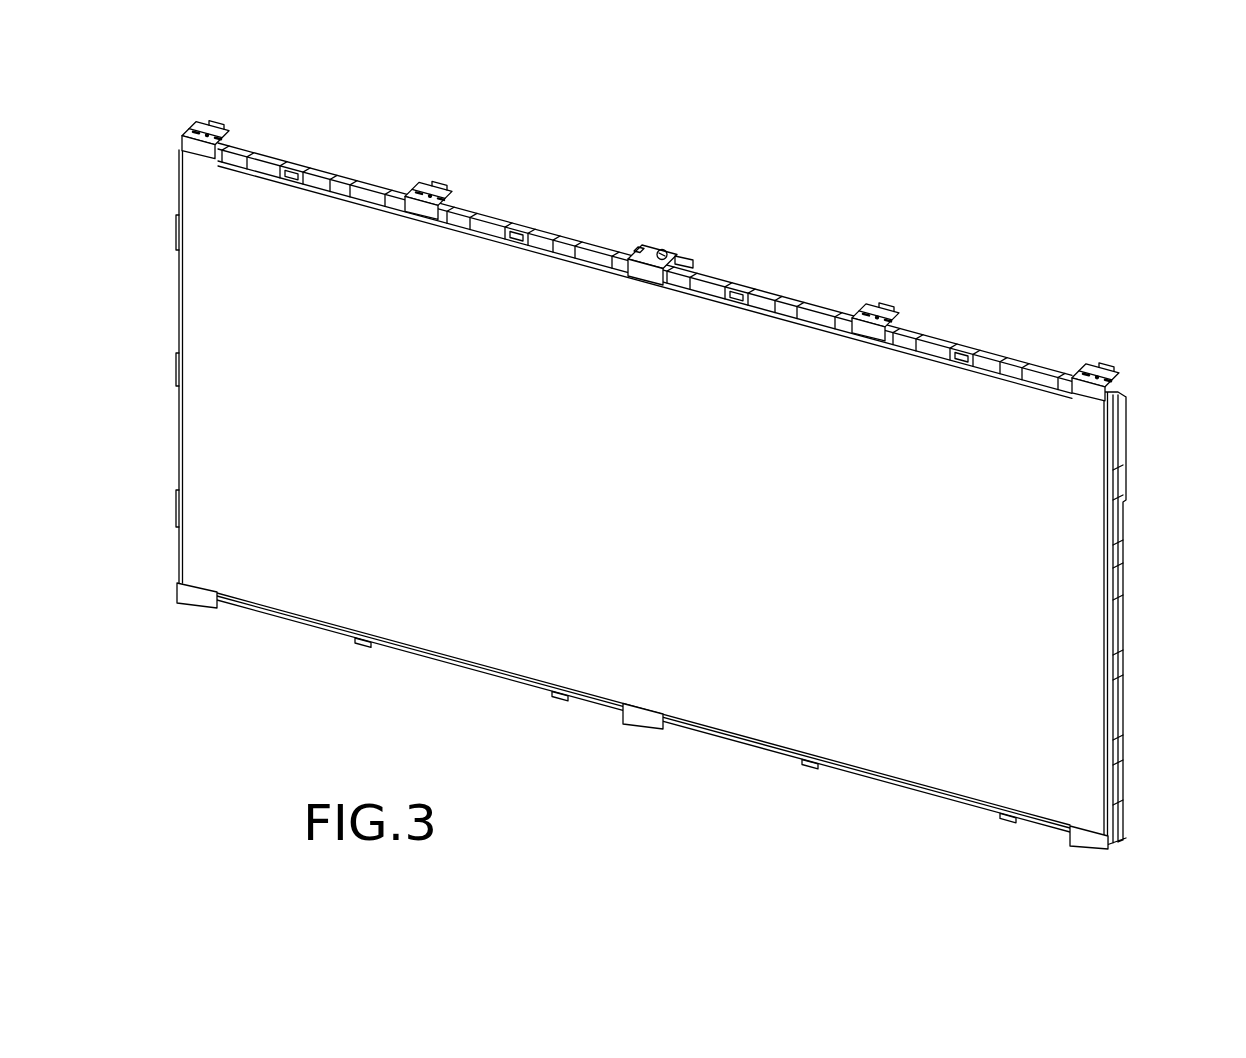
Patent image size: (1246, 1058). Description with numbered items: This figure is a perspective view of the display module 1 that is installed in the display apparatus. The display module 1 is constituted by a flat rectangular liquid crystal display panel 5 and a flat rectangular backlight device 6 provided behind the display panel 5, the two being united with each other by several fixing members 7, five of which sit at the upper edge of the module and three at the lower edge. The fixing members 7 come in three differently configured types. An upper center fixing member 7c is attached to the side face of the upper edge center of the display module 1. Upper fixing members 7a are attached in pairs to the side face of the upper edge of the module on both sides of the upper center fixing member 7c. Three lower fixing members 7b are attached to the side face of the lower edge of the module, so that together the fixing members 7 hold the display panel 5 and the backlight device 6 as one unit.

The display module 1 is at (1066, 169).
The liquid crystal display panel 5 is at (465, 630).
The backlight device 6 is at (1060, 607).
The fixing members 7 is at (659, 486).
The upper fixing members 7a is at (216, 128).
The lower fixing members 7b is at (198, 594).
The upper center fixing member 7c is at (664, 255).